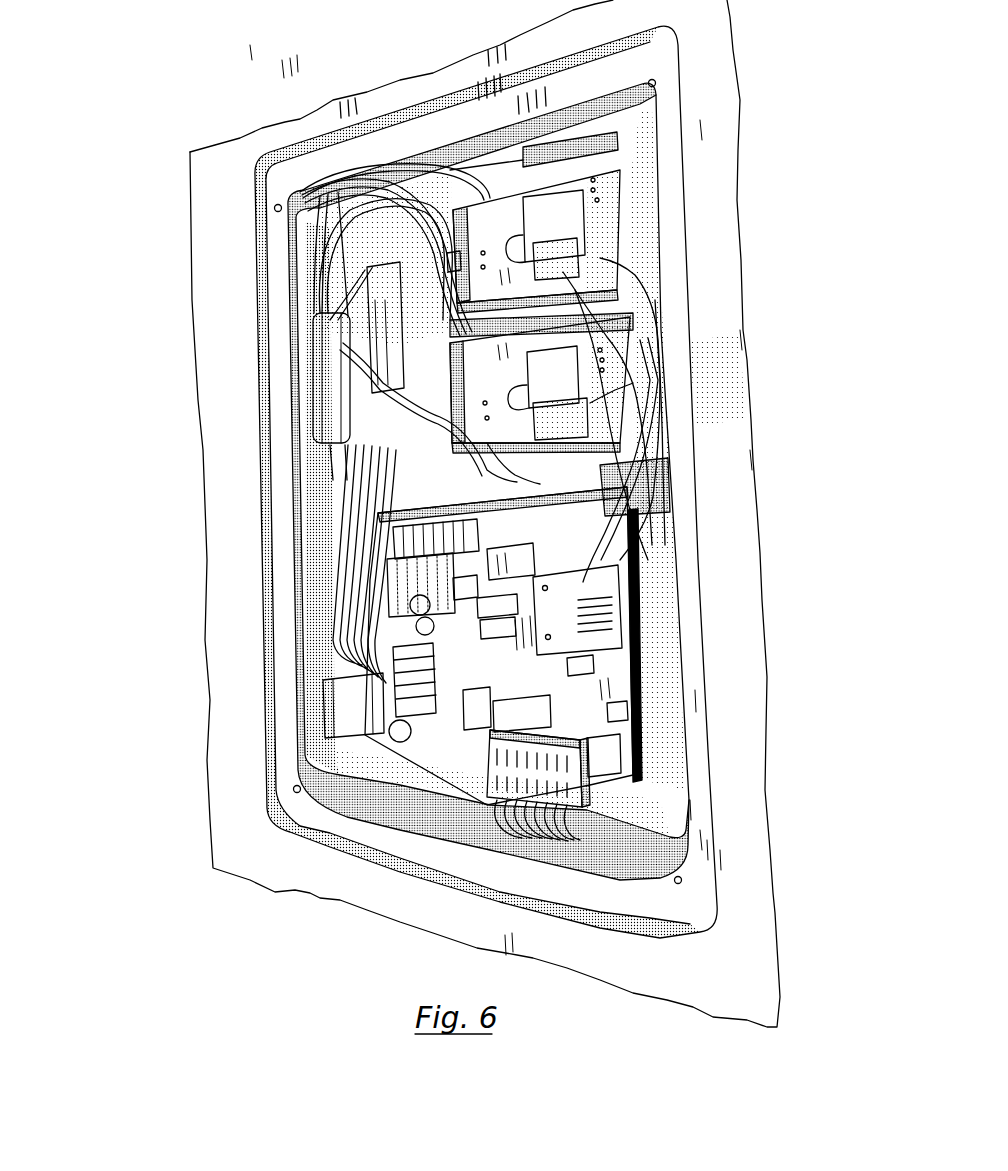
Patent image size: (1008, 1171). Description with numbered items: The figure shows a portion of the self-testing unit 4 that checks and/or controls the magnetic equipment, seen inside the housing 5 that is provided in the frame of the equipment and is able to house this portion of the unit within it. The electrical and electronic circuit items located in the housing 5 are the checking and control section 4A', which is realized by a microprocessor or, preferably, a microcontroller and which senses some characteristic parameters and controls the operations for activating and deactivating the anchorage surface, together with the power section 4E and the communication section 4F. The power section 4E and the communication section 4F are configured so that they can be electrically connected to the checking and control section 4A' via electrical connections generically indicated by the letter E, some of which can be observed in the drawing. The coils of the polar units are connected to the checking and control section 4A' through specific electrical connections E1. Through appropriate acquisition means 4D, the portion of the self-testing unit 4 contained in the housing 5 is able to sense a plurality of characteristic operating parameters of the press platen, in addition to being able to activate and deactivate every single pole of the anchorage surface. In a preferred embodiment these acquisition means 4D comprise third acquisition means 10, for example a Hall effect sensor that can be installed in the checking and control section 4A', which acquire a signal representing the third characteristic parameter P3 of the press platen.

The self-testing unit 4 is at (247, 125).
The acquisition means 4D is at (687, 853).
The housing 5 is at (662, 771).
The power section 4E is at (588, 340).
The checking and control section 4A' is at (711, 620).
The third acquisition means 10 is at (595, 646).
The third characteristic parameter P3 is at (598, 639).
The electrical connections E1 is at (515, 812).
The communication section 4F is at (343, 581).